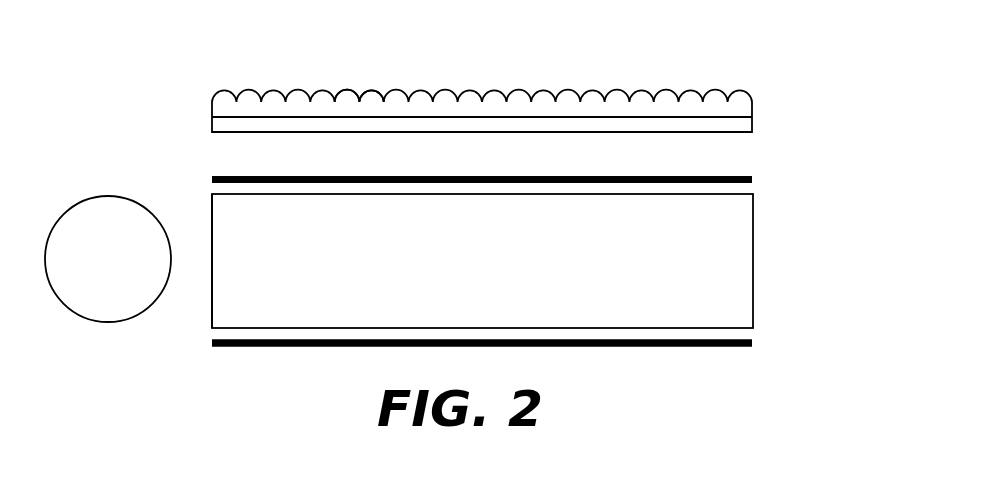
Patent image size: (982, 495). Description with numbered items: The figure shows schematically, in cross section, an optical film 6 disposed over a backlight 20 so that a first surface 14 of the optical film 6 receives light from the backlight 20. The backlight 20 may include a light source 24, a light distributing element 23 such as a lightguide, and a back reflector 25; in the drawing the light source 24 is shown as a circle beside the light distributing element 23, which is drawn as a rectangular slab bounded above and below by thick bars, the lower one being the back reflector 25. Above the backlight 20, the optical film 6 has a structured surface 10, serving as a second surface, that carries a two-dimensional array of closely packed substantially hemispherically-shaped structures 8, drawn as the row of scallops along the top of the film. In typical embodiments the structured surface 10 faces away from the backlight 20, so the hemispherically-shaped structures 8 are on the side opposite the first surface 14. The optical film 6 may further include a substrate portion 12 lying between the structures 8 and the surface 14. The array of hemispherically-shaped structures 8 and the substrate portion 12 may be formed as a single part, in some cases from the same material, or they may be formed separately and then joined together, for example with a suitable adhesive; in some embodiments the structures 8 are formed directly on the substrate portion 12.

The optical film 6 is at (152, 74).
The substantially hemispherically-shaped structures 8 is at (367, 91).
The structured surface 10 is at (752, 96).
The substrate portion 12 is at (752, 128).
The surface 14 is at (728, 133).
The backlight 20 is at (781, 265).
The light distributing element 23 is at (223, 302).
The light source 24 is at (107, 302).
The back reflector 25 is at (642, 347).